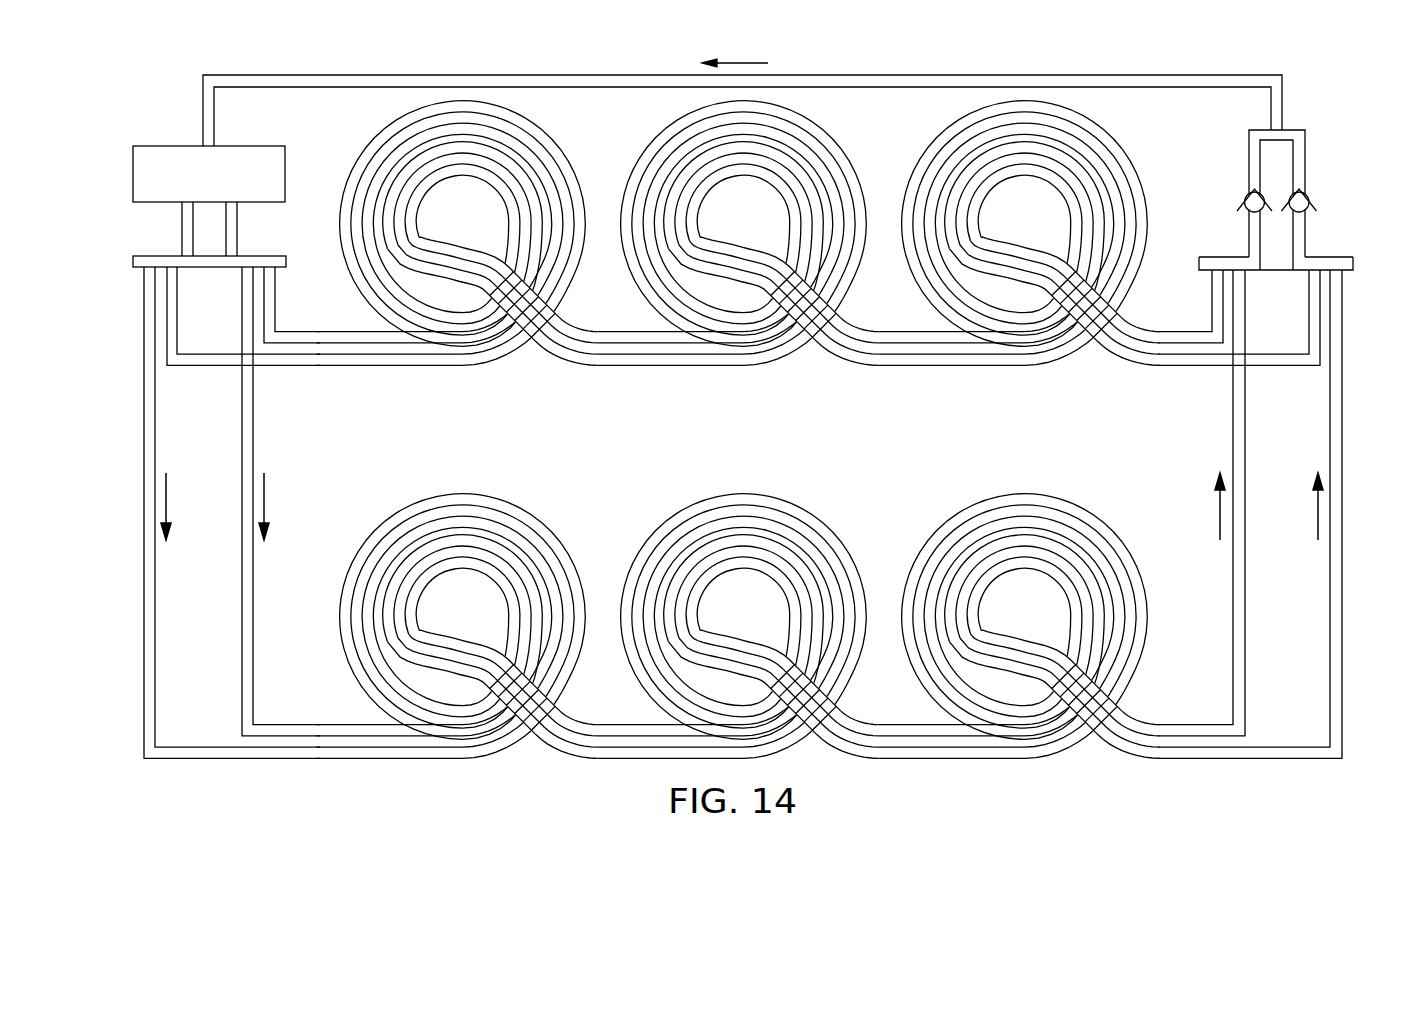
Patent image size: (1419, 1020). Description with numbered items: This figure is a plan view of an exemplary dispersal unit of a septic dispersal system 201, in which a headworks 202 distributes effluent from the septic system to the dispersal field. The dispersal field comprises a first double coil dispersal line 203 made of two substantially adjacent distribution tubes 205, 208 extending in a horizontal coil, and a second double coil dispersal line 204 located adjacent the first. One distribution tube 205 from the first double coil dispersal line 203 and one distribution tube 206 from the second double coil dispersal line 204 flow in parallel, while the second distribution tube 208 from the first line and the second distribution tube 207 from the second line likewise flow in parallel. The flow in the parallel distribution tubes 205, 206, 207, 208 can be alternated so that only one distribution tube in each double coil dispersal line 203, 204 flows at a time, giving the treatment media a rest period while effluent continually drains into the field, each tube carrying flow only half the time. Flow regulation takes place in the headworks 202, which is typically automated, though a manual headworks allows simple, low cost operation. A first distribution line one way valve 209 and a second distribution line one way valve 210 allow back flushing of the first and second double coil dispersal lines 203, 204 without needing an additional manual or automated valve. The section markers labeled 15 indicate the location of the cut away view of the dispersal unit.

The septic dispersal system 201 is at (1142, 796).
The headworks 202 is at (180, 146).
The first double coil dispersal line 203 is at (662, 477).
The second double coil dispersal line 204 is at (802, 383).
The distribution tube 205 is at (320, 724).
The distribution tube 206 is at (332, 367).
The distribution tube 207 is at (332, 331).
The distribution tube 208 is at (322, 759).
The first distribution line one way valve 209 is at (1244, 194).
The second distribution line one way valve 210 is at (1308, 194).
The section line 15- 15 is at (1018, 483).